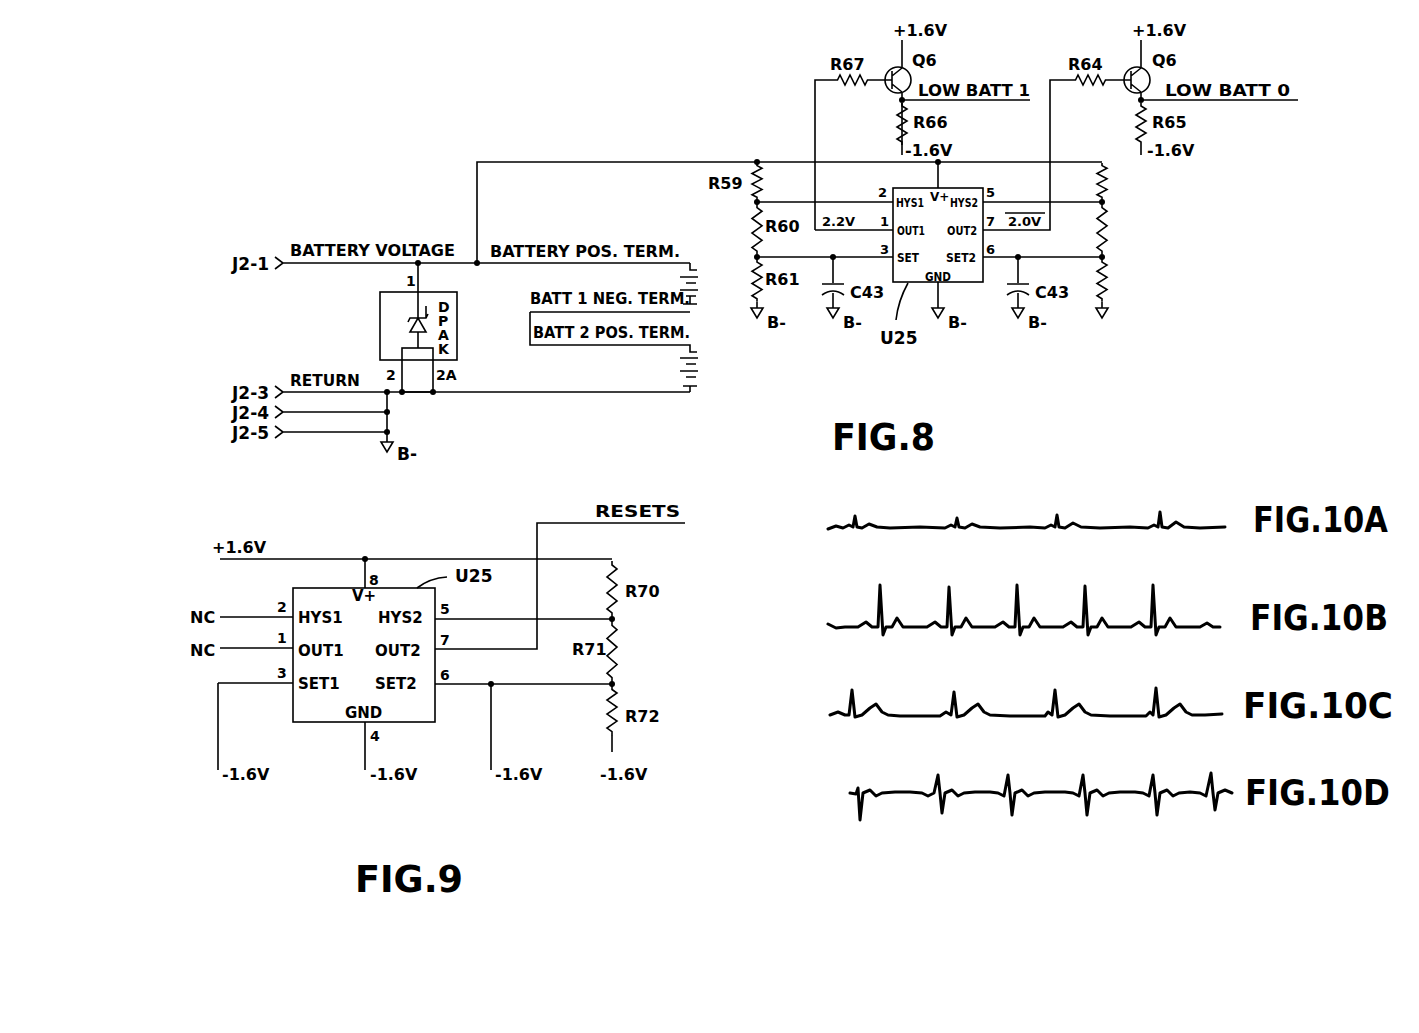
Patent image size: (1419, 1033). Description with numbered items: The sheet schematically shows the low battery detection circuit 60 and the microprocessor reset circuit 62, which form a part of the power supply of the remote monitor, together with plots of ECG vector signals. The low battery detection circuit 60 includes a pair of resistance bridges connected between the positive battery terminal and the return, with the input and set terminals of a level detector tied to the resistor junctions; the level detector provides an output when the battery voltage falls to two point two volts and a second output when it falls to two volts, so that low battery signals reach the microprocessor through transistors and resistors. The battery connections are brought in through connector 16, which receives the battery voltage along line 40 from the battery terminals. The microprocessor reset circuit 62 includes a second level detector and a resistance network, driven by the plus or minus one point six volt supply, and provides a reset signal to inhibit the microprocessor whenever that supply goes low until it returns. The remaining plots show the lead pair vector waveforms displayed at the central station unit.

In FIG. 8, the battery voltage bus line 40 is at (553, 162).
In FIG. 8, the battery connector J8 16 is at (694, 289).
In FIG. 8, the low battery detection circuit 60 is at (1138, 272).
In FIG. 9, the microprocessor reset circuit 62 is at (629, 674).